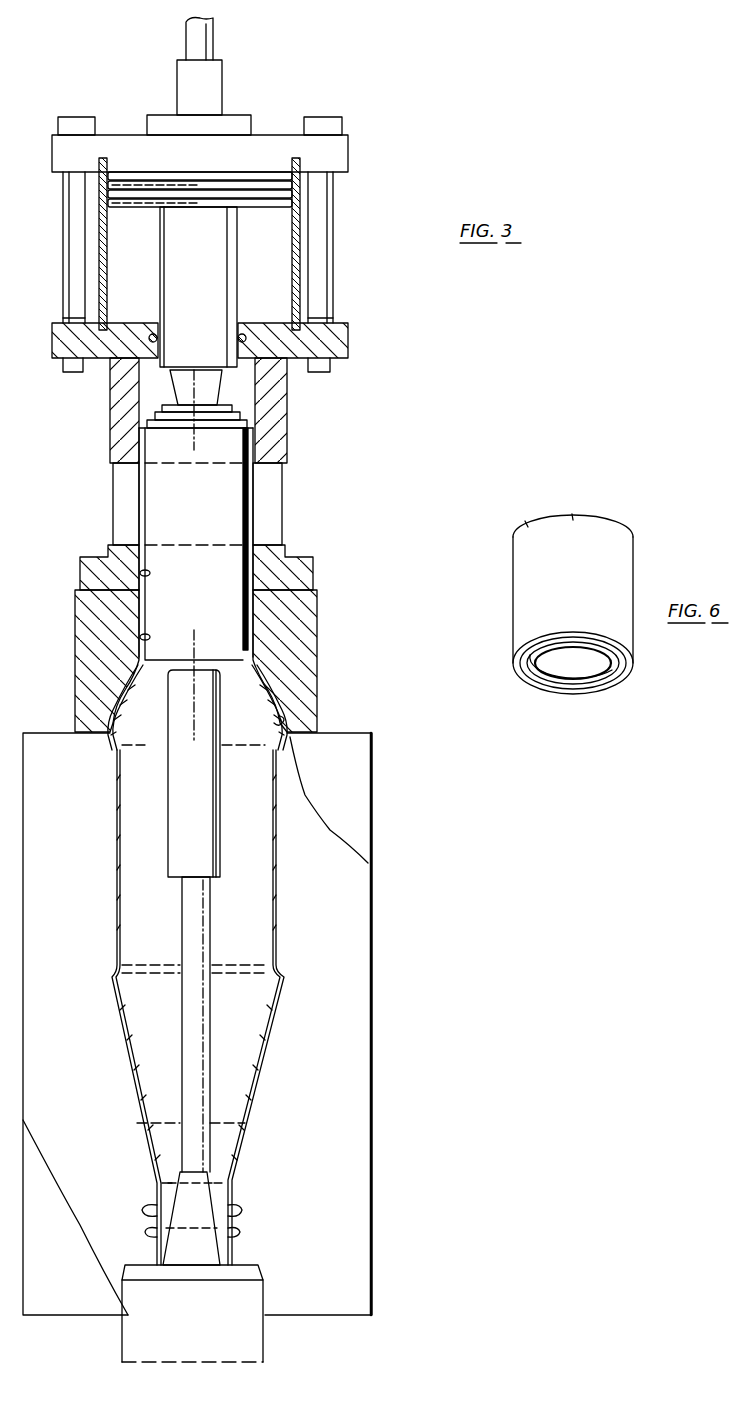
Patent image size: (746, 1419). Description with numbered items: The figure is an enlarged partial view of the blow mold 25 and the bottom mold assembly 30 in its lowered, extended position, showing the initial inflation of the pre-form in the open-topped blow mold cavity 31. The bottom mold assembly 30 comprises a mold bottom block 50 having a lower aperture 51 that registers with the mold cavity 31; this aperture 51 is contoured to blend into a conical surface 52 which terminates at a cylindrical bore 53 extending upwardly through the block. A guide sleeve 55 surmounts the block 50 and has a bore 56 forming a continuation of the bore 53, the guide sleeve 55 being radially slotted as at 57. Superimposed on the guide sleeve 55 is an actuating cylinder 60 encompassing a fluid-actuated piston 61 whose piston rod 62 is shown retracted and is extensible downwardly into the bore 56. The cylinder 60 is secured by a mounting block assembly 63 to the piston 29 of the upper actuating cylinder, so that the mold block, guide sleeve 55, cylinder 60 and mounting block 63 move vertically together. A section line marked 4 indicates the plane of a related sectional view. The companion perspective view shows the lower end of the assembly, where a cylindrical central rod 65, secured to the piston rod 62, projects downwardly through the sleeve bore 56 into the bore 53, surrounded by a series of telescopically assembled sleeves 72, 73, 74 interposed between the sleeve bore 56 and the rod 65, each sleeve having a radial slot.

In FIG. 3, the piston 29 is at (213, 33).
In FIG. 3, the mounting block assembly 63 is at (217, 95).
In FIG. 3, the actuating cylinder 60 is at (340, 248).
In FIG. 3, the fluid-actuated piston 61 is at (257, 203).
In FIG. 3, the piston rod 62 is at (207, 282).
In FIG. 3, the section line 4- 4 is at (209, 376).
In FIG. 3, the radial slot 57 is at (277, 473).
In FIG. 3, the bottom mold assembly 30 is at (226, 630).
In FIG. 3, the guide sleeve 55 is at (296, 552).
In FIG. 3, the mold bottom block 50 is at (298, 668).
In FIG. 3, the bore 56 is at (140, 573).
In FIG. 3, the cylindrical bore 53 is at (140, 637).
In FIG. 3, the conical surface 52 is at (117, 703).
In FIG. 3, the lower aperture 51 is at (280, 726).
In FIG. 3, the blow mold 25 is at (382, 925).
In FIG. 3, the blow mold cavity 31 is at (272, 890).
In FIG. 6, the central rod 65 is at (553, 653).
In FIG. 6, the telescopically assembled sleeve 72 is at (567, 676).
In FIG. 6, the telescopically assembled sleeve 73 is at (583, 688).
In FIG. 6, the telescopically assembled sleeve 74 is at (602, 694).